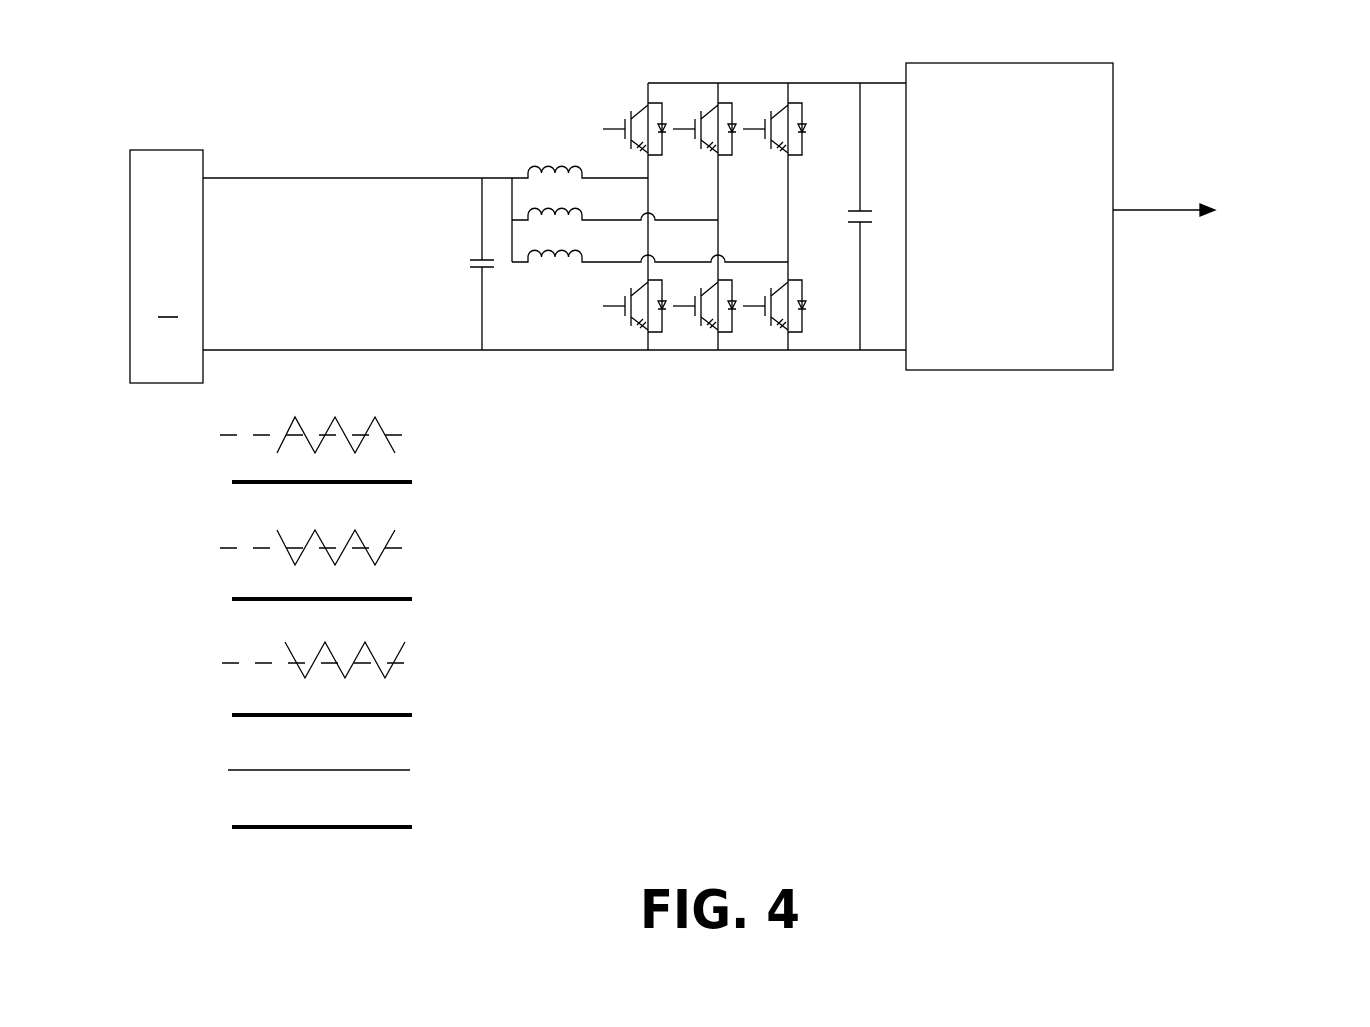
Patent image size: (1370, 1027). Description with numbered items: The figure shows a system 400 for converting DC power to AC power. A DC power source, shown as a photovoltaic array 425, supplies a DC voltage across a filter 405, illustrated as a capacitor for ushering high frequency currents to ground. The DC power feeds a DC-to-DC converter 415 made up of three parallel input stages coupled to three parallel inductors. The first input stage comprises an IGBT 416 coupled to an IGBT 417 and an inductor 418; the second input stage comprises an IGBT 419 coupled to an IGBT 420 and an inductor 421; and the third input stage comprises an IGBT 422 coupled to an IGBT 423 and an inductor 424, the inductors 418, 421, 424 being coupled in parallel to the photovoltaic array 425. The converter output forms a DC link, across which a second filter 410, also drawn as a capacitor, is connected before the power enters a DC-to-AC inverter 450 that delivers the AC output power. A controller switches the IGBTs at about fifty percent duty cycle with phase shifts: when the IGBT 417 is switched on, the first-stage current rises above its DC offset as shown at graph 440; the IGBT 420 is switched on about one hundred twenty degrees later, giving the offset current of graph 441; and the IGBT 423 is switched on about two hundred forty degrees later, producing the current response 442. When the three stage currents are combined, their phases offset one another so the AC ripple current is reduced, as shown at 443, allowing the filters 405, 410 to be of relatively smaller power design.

The system 400 is at (723, 452).
The filter 405 is at (459, 264).
The filter 410 is at (876, 216).
The DC-to-DC converter 415 is at (709, 266).
The IGBT 416 is at (632, 120).
The IGBT 417 is at (632, 316).
The inductor 418 is at (580, 158).
The IGBT 419 is at (702, 120).
The IGBT 420 is at (702, 316).
The inductor 421 is at (615, 200).
The IGBT 422 is at (771, 120).
The IGBT 423 is at (771, 316).
The inductor 424 is at (650, 243).
The photovoltaic array 425 is at (166, 266).
The graph 440 is at (513, 430).
The graph 441 is at (513, 544).
The current response 442 is at (507, 662).
The combined current 443 is at (517, 770).
The DC-to-AC inverter 450 is at (1009, 216).